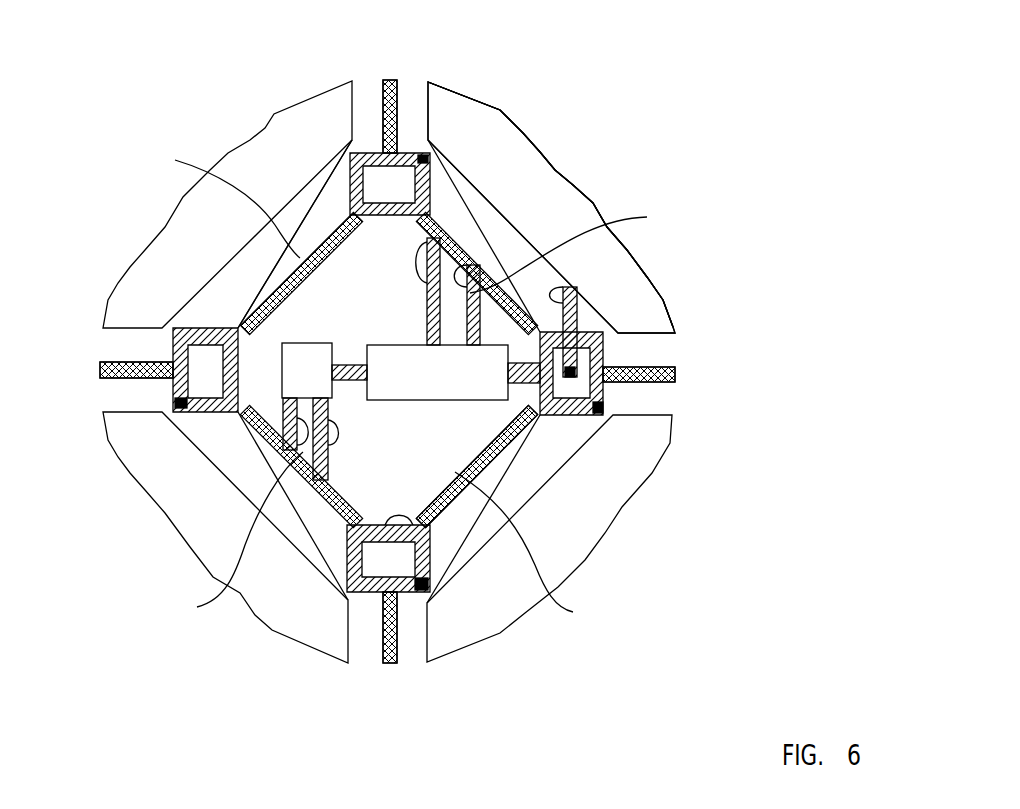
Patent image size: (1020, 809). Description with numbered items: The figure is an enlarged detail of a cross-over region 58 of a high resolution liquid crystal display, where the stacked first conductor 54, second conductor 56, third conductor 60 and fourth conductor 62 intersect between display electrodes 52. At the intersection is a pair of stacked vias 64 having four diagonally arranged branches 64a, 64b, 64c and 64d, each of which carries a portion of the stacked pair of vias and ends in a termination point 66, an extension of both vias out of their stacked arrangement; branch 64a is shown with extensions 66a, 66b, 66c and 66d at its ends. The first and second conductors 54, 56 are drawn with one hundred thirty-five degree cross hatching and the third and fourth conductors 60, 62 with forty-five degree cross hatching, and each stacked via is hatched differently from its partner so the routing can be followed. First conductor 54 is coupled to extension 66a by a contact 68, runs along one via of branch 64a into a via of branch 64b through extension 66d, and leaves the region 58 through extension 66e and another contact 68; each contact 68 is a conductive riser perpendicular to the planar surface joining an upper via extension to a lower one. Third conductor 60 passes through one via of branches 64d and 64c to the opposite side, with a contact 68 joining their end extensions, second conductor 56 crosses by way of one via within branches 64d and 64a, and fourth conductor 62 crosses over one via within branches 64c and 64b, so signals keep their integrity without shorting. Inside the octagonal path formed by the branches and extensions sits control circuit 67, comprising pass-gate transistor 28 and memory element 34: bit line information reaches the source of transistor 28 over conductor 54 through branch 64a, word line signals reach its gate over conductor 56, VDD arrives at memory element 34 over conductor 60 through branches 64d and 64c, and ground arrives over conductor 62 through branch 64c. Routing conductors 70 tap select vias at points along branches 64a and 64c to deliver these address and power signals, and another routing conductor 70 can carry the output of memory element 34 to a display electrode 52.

The pass-gate transistor 28 is at (307, 370).
The memory element 34 is at (437, 372).
The display electrode 52 is at (627, 250).
The first conductor 54 is at (102, 362).
The second conductor 56 is at (383, 98).
The cross-over region 58 is at (612, 185).
The third conductor 60 is at (102, 378).
The fourth conductor 62 is at (397, 98).
The stacked vias 64 is at (497, 238).
The branch 64a is at (225, 537).
The branch 64b is at (549, 538).
The branch 64c is at (558, 207).
The branch 64d is at (227, 204).
The termination point 66 is at (368, 142).
The extension 66a is at (205, 415).
The extension 66b is at (247, 312).
The extension 66c is at (347, 558).
The extension 66d is at (433, 555).
The extension 66e is at (575, 418).
The control circuit 67 is at (450, 462).
The contact 68 is at (428, 150).
The routing conductor 70 is at (462, 285).